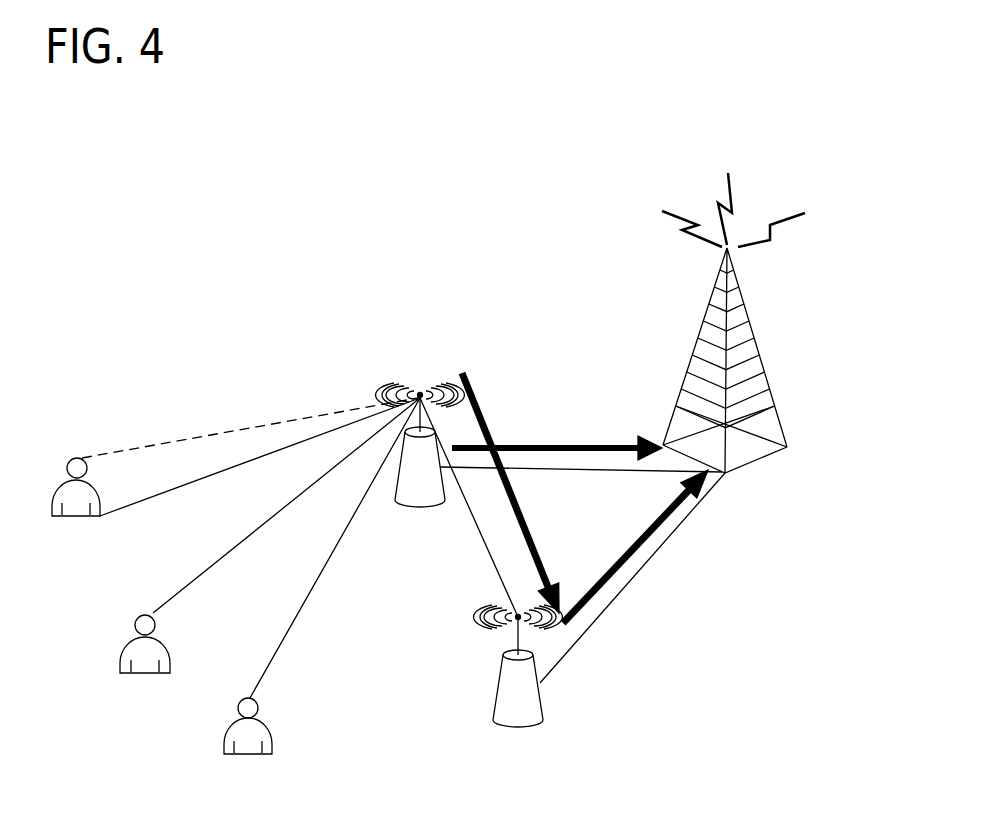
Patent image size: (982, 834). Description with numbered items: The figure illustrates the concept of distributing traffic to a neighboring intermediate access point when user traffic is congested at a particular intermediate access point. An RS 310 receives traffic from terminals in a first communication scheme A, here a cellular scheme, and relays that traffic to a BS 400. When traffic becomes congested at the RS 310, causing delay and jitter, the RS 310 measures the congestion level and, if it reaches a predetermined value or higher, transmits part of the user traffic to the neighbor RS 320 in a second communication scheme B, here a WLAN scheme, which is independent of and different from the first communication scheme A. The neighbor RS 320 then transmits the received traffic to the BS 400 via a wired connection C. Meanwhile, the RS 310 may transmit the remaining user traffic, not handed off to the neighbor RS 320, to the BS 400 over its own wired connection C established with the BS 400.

The RS 310 is at (425, 497).
The neighbor RS 320 is at (517, 715).
The BS 400 is at (758, 362).
The first communication scheme A is at (257, 427).
The second communication scheme B is at (490, 557).
The wired connection C is at (637, 472).